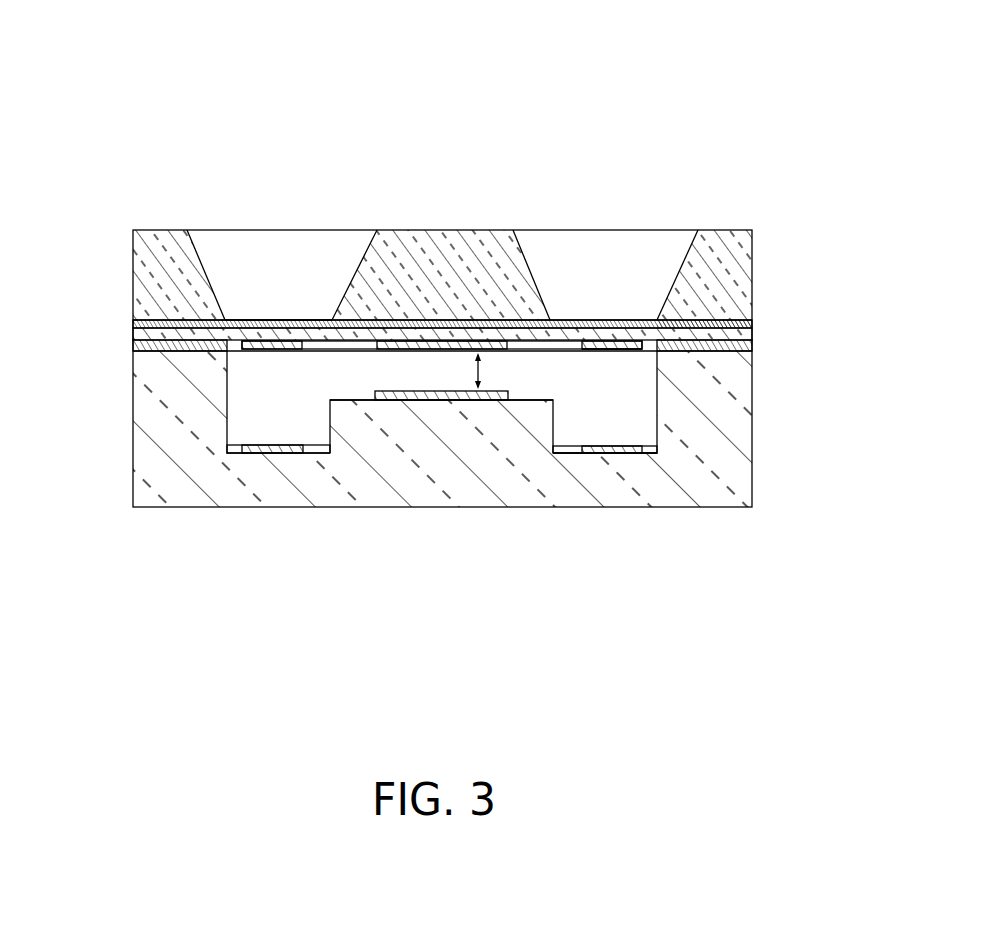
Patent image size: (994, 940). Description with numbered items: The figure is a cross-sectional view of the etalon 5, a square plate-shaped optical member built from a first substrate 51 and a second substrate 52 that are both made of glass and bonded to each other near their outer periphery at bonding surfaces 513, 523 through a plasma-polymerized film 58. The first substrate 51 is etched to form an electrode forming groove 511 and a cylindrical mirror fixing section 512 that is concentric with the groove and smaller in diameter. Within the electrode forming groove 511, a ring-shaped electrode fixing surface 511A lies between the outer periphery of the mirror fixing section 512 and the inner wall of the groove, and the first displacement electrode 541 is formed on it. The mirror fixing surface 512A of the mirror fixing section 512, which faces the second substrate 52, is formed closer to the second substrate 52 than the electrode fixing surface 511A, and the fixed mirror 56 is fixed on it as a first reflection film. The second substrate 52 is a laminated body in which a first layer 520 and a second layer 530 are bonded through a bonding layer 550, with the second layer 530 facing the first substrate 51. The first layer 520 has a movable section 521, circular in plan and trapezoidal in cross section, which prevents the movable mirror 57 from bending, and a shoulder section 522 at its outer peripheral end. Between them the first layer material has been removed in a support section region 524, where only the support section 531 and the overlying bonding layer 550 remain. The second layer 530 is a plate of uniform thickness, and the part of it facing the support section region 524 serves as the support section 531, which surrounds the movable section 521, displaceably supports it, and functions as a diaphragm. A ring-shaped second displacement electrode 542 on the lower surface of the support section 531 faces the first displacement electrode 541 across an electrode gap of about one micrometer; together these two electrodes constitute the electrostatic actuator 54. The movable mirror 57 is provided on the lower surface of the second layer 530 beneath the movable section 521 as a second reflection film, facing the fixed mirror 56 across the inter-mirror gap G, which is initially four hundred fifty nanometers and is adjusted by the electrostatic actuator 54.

The etalon 5 is at (738, 86).
The first substrate 51 is at (753, 460).
The electrode forming groove 511 is at (657, 394).
The electrode fixing surface 511A is at (657, 453).
The mirror fixing section 512 is at (553, 431).
The mirror fixing surface 512A is at (360, 400).
The bonding surface 513 is at (738, 325).
The second substrate 52 is at (442, 235).
The first layer 520 is at (134, 273).
The movable section 521 is at (492, 238).
The shoulder section 522 is at (740, 288).
The bonding surface 523 is at (738, 347).
The support section region 524 is at (280, 270).
The second layer 530 is at (133, 333).
The support section 531 is at (607, 350).
The electrostatic actuator 54 is at (601, 502).
The first displacement electrode 541 is at (597, 450).
The second displacement electrode 542 is at (607, 353).
The bonding layer 550 is at (133, 325).
The fixed mirror 56 is at (377, 393).
The movable mirror 57 is at (418, 344).
The plasma-polymerized film 58 is at (133, 347).
The inter-mirror gap G is at (474, 367).